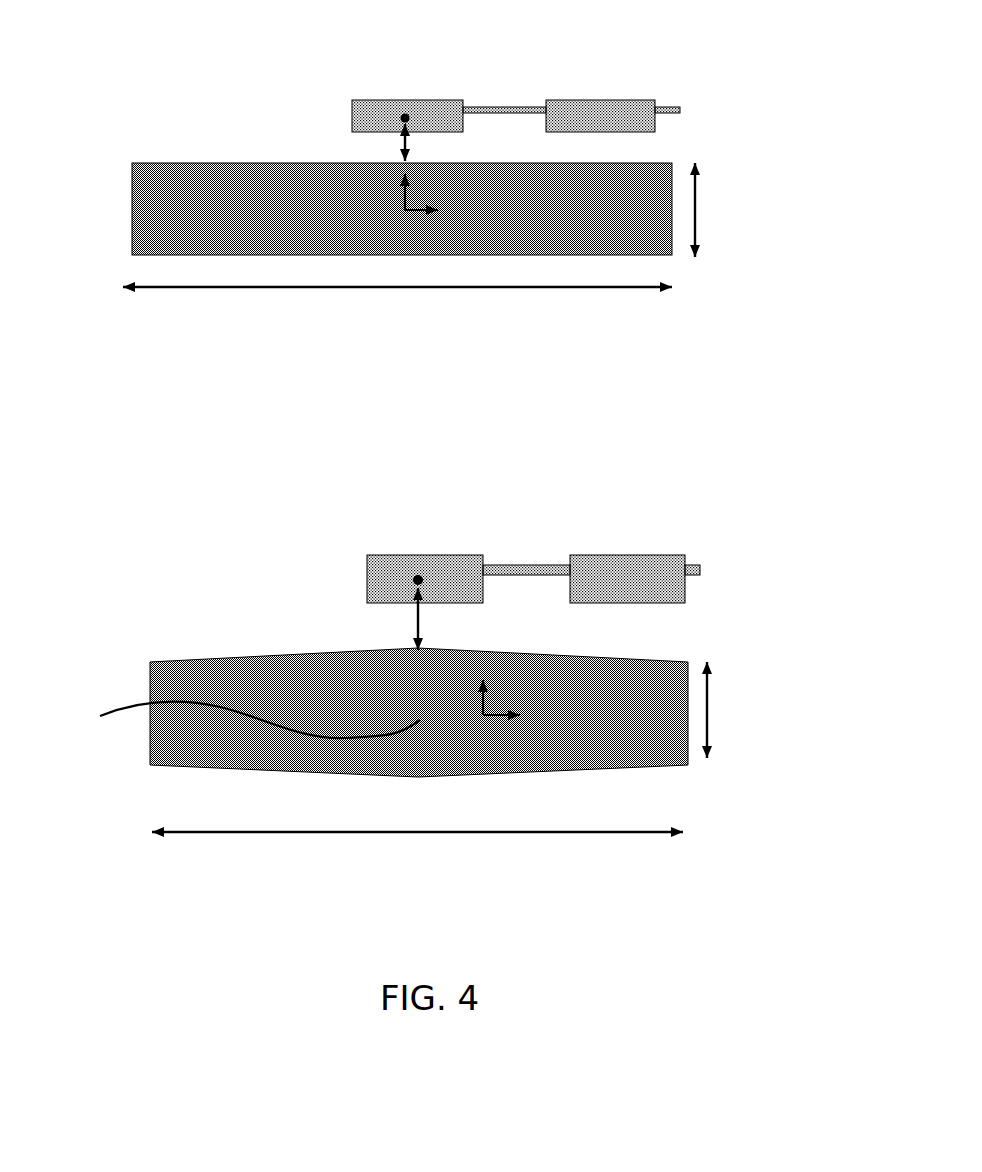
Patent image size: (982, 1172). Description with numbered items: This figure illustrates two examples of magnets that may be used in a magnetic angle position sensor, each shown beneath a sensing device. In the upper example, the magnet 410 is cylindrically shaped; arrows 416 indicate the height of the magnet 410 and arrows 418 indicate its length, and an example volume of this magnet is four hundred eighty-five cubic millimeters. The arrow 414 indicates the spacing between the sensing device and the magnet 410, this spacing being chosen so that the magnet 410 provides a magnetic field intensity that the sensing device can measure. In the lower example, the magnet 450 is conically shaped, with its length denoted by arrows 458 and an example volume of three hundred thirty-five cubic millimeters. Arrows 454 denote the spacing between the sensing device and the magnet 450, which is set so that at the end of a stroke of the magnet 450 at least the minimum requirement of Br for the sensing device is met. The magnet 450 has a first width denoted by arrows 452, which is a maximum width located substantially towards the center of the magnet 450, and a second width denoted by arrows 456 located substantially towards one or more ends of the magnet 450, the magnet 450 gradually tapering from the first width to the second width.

The magnet 410 is at (172, 193).
The arrow 414 is at (400, 143).
The arrows 416 is at (697, 218).
The arrows 418 is at (540, 288).
The magnet 450 is at (185, 672).
The arrows 452 is at (239, 720).
The arrows 454 is at (412, 622).
The arrows 456 is at (707, 715).
The arrows 458 is at (568, 832).